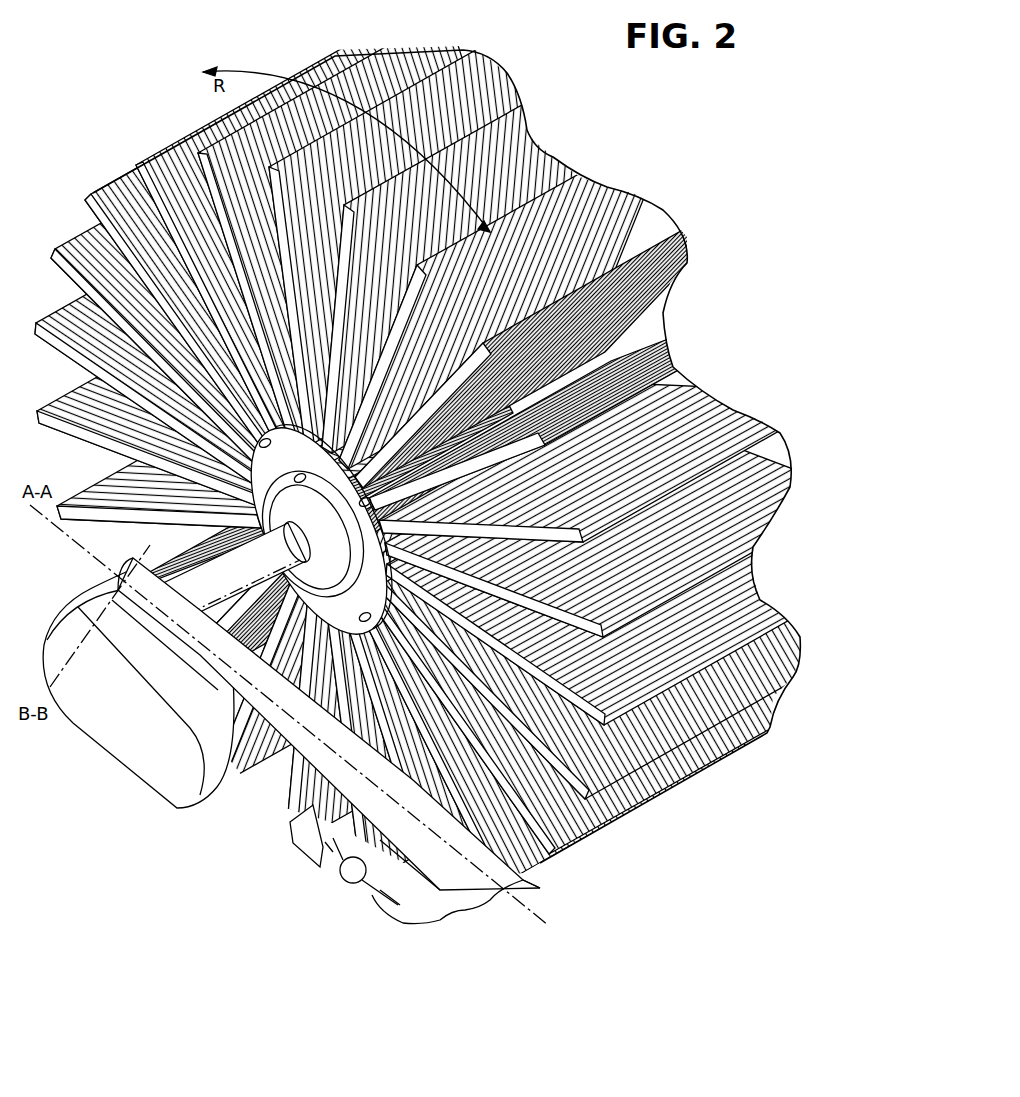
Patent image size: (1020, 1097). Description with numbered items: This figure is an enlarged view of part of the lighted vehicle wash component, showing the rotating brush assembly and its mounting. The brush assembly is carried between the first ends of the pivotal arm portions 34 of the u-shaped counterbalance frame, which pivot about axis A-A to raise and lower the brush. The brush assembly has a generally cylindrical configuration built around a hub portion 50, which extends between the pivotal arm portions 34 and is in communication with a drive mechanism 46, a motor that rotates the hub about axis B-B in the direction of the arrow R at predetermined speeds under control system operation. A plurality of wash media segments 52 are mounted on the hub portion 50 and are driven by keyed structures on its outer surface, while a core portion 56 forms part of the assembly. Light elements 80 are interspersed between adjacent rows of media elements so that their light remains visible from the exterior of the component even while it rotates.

The pivotal arm portions 34 is at (300, 757).
The drive mechanism 46 is at (122, 742).
The hub portion 50 is at (210, 573).
The wash media segments 52 is at (441, 455).
The core portion 56 is at (378, 540).
The light elements 80 is at (653, 333).